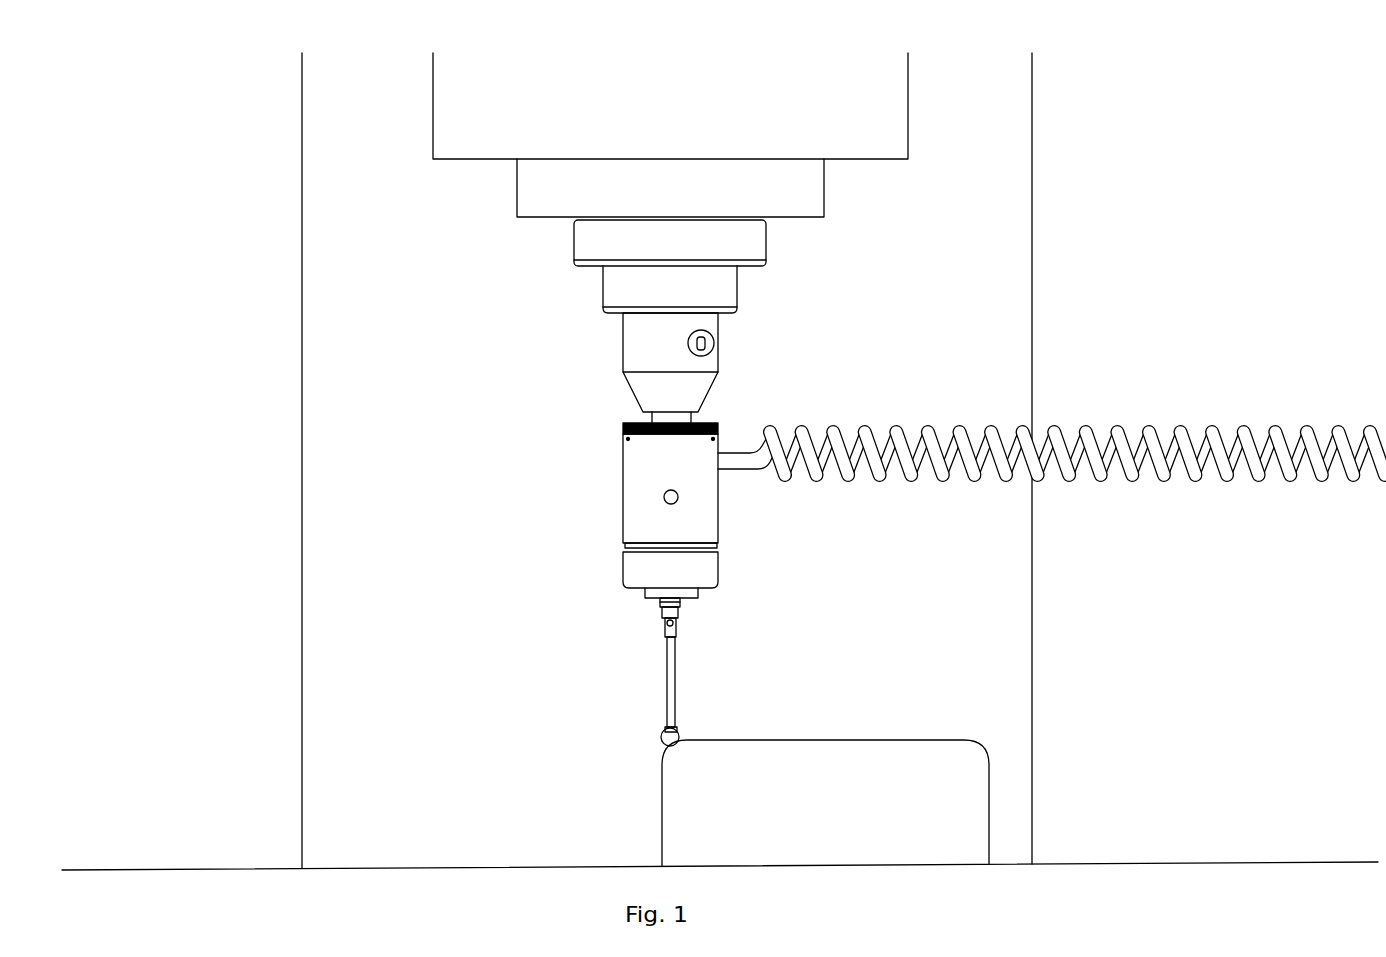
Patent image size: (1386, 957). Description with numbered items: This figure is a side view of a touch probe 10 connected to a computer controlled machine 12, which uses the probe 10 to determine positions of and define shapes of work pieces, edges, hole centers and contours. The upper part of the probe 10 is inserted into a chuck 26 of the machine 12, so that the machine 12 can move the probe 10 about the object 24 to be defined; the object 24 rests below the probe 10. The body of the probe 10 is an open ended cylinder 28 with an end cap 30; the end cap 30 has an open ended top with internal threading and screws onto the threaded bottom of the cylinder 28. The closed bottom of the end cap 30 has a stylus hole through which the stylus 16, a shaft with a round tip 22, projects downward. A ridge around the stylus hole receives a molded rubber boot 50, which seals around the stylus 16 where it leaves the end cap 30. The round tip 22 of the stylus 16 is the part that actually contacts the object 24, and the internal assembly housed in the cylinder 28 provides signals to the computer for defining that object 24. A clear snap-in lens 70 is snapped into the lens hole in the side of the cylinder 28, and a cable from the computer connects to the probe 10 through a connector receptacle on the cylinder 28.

The touch probe 10 is at (605, 472).
The computer controlled machine 12 is at (682, 142).
The stylus 16 is at (670, 678).
The round tip 22 is at (662, 742).
The object 24 is at (835, 810).
The chuck 26 is at (720, 360).
The open ended cylinder 28 is at (718, 530).
The end cap 30 is at (718, 563).
The molded rubber boot 50 is at (695, 597).
The clear snap-in lens 70 is at (678, 497).